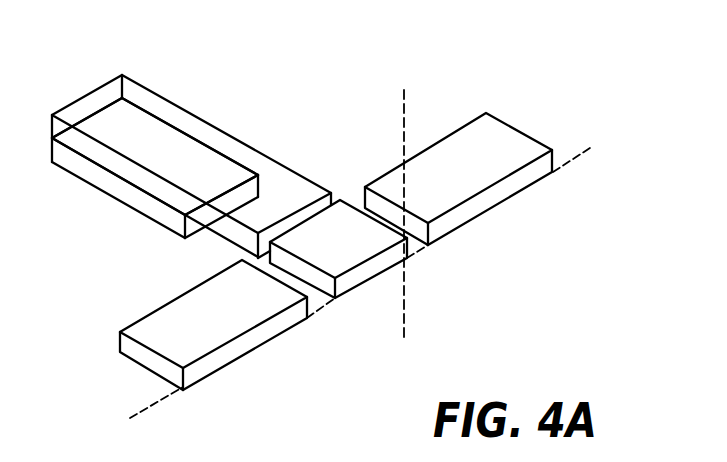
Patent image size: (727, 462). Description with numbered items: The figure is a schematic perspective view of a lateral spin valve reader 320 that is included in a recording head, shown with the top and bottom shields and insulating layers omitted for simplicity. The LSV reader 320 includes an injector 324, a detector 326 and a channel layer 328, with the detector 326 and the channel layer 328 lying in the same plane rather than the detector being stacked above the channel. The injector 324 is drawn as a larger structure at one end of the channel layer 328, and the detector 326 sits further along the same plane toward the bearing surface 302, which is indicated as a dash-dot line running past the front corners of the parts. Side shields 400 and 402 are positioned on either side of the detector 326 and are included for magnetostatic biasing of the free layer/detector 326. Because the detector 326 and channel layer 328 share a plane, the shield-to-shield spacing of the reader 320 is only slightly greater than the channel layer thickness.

The lateral spin valve reader 320 is at (373, 29).
The bearing surface 302 is at (567, 162).
The injector 324 is at (128, 196).
The channel layer 328 is at (208, 190).
The detector 326 is at (335, 252).
The side shield 400 is at (170, 340).
The side shield 402 is at (495, 152).